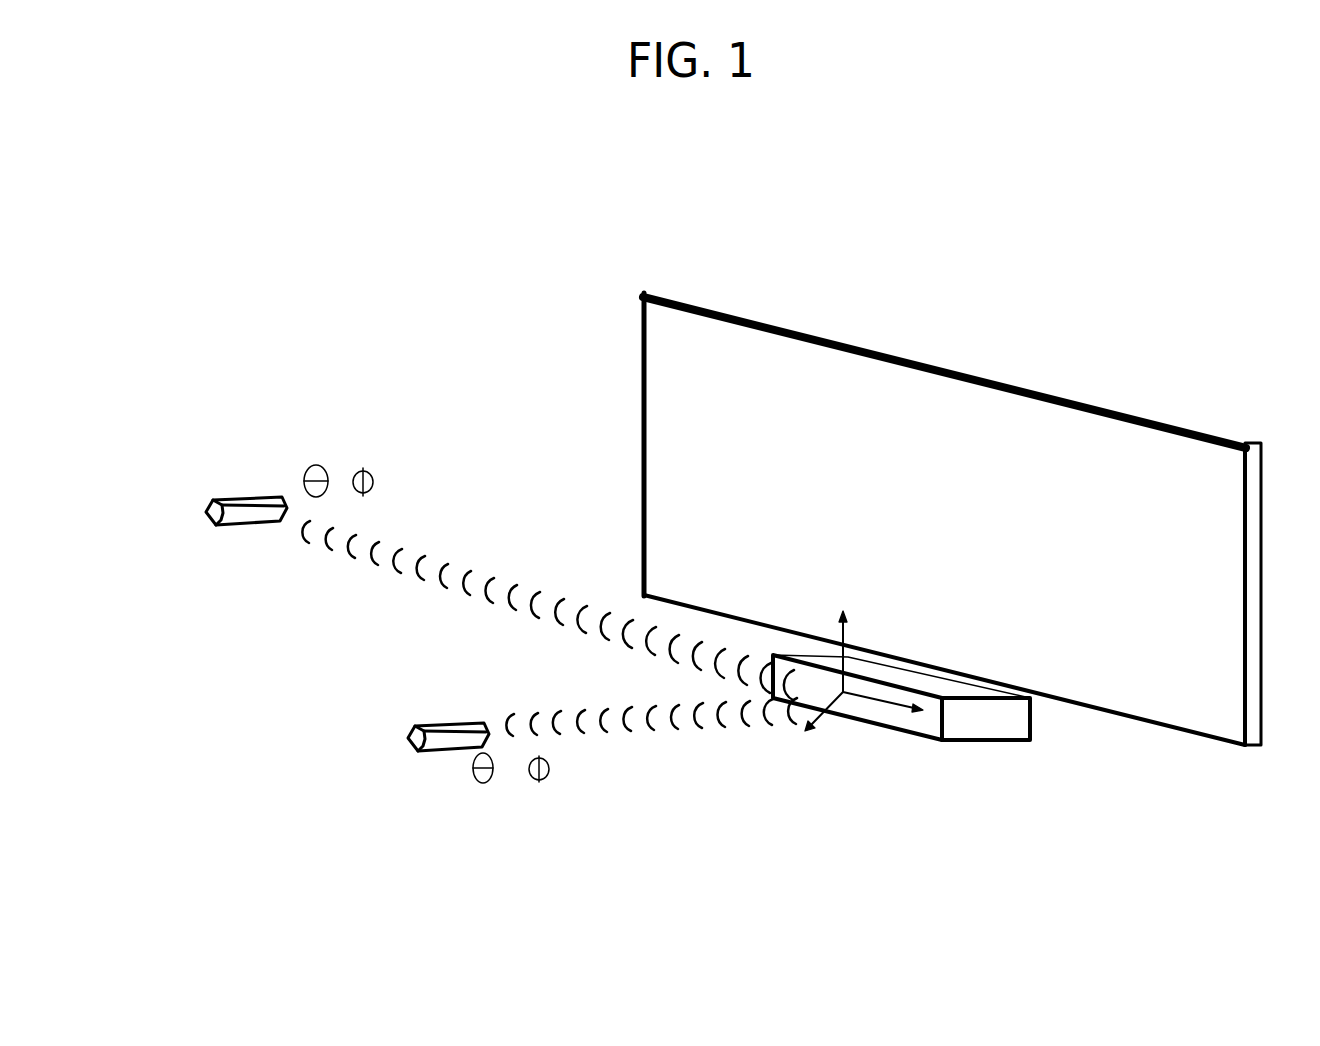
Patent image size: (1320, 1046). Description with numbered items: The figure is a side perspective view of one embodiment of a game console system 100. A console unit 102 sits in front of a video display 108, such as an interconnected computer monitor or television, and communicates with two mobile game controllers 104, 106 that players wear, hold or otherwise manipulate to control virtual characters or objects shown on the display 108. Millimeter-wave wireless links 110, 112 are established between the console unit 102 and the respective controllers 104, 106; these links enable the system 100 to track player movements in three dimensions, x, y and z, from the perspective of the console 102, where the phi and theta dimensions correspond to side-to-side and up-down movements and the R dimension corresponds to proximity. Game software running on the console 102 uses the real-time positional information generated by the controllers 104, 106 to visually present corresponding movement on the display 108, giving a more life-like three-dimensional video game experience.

The game console system 100 is at (352, 321).
The console unit 102 is at (998, 742).
The mobile game controller 104 is at (243, 528).
The mobile game controller 106 is at (452, 755).
The video display 108 is at (643, 325).
The millimeter-wave wireless link 110 is at (402, 590).
The millimeter-wave wireless link 112 is at (677, 732).